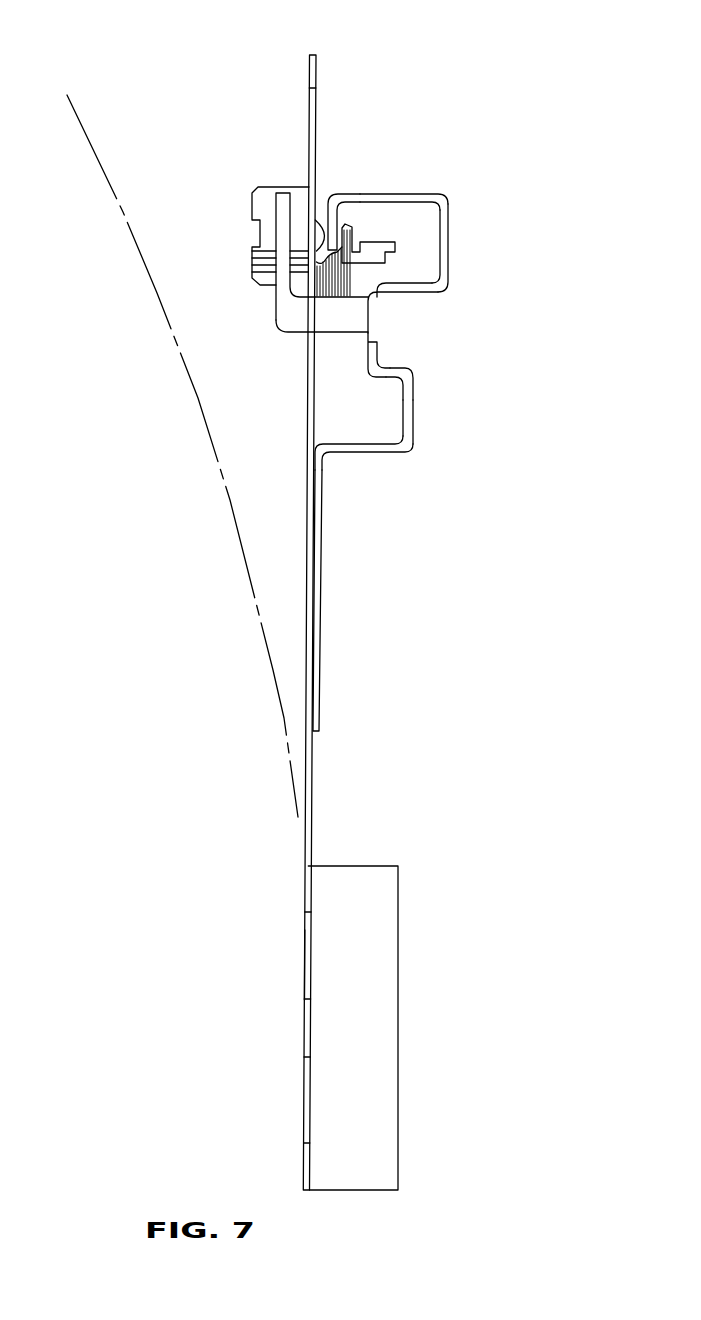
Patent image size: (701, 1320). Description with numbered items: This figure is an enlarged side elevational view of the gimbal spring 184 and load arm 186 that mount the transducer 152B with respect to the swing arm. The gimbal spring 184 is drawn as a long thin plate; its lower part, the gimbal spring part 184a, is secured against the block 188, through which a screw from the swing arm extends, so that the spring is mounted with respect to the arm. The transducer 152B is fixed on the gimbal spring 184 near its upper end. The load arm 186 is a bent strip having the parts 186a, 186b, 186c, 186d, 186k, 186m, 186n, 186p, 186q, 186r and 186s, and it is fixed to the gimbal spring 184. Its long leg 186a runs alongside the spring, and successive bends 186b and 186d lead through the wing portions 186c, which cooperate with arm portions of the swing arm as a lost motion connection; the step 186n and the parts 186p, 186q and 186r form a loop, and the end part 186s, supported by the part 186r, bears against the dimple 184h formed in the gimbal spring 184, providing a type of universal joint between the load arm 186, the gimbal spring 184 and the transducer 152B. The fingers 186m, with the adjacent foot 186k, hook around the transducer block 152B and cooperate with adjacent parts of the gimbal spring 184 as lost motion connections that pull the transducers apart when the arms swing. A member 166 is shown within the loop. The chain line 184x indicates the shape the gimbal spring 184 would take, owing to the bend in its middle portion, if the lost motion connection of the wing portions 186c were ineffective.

The gimbal spring 184 is at (317, 65).
The gimbal spring part 184a is at (303, 1030).
The dimple 184h is at (319, 212).
The shape of the gimbal spring 184x is at (155, 290).
The transducer 152B is at (297, 183).
The latch member 166 is at (354, 233).
The load arm 186 is at (320, 654).
The load arm part 186a is at (323, 572).
The load arm part 186b is at (372, 453).
The wing portions 186c is at (414, 405).
The load arm part 186d is at (392, 378).
The load arm part 186k is at (290, 334).
The fingers 186m is at (282, 195).
The load arm part 186n is at (372, 342).
The load arm part 186p is at (413, 296).
The load arm part 186q is at (449, 238).
The load arm part 186r is at (410, 195).
The load arm part 186s is at (343, 212).
The block 188 is at (384, 865).